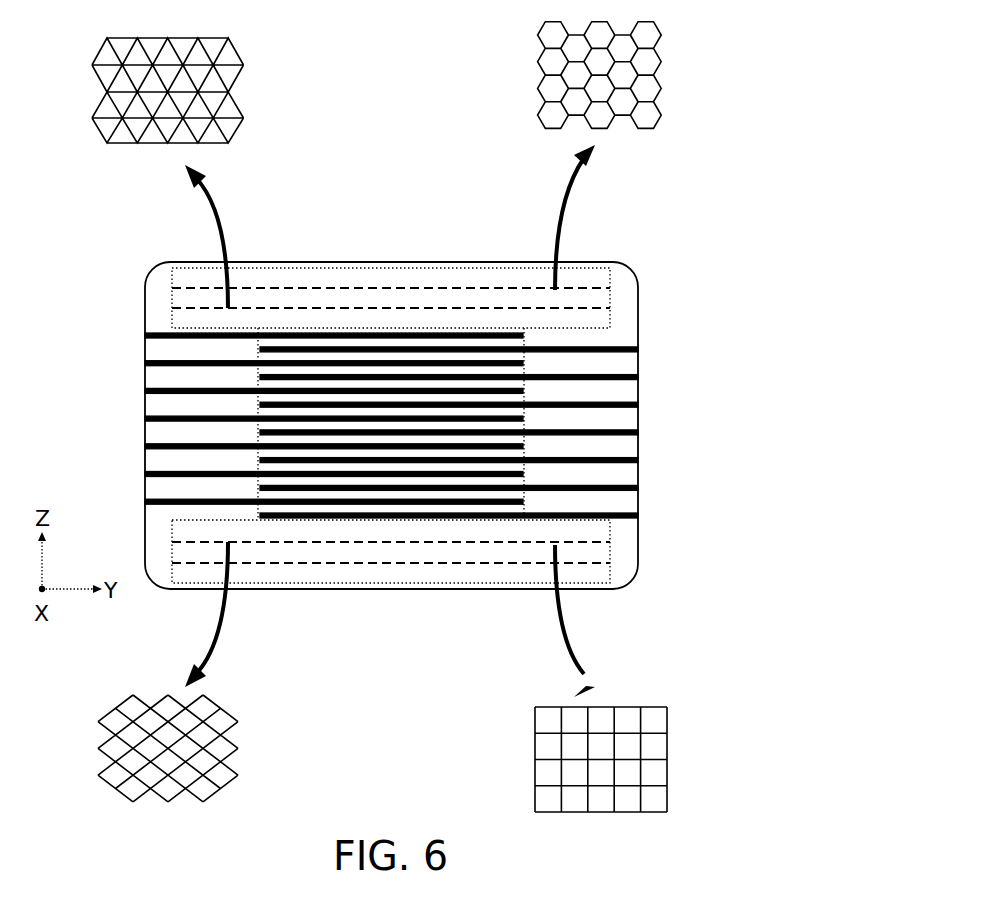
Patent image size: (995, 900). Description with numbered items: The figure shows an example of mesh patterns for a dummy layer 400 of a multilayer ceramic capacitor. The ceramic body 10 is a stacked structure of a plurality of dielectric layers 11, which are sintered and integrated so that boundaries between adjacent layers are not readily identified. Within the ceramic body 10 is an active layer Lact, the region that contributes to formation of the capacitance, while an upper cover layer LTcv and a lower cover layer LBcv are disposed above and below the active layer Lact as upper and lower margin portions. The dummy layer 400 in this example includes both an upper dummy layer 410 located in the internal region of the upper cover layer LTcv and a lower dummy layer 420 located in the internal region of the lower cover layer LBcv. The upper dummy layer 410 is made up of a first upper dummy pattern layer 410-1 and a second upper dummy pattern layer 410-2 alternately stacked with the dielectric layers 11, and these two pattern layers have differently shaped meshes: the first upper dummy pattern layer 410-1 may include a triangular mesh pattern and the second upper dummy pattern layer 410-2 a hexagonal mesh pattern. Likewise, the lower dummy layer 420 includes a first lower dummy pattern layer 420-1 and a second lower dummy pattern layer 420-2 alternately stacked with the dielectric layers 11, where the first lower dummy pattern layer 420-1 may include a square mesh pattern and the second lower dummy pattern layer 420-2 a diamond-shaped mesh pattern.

The ceramic body 10 is at (393, 263).
The dielectric layers 11 is at (322, 345).
The dummy layer 400 is at (467, 427).
The upper dummy layer 410 is at (486, 251).
The first upper dummy pattern layer 410-1 is at (592, 309).
The second upper dummy pattern layer 410-2 is at (592, 289).
The lower dummy layer 420 is at (486, 600).
The first lower dummy pattern layer 420-1 is at (592, 563).
The second lower dummy pattern layer 420-2 is at (592, 542).
The active layer Lact is at (355, 347).
The upper cover layer LTcv is at (452, 268).
The lower cover layer LBcv is at (452, 583).